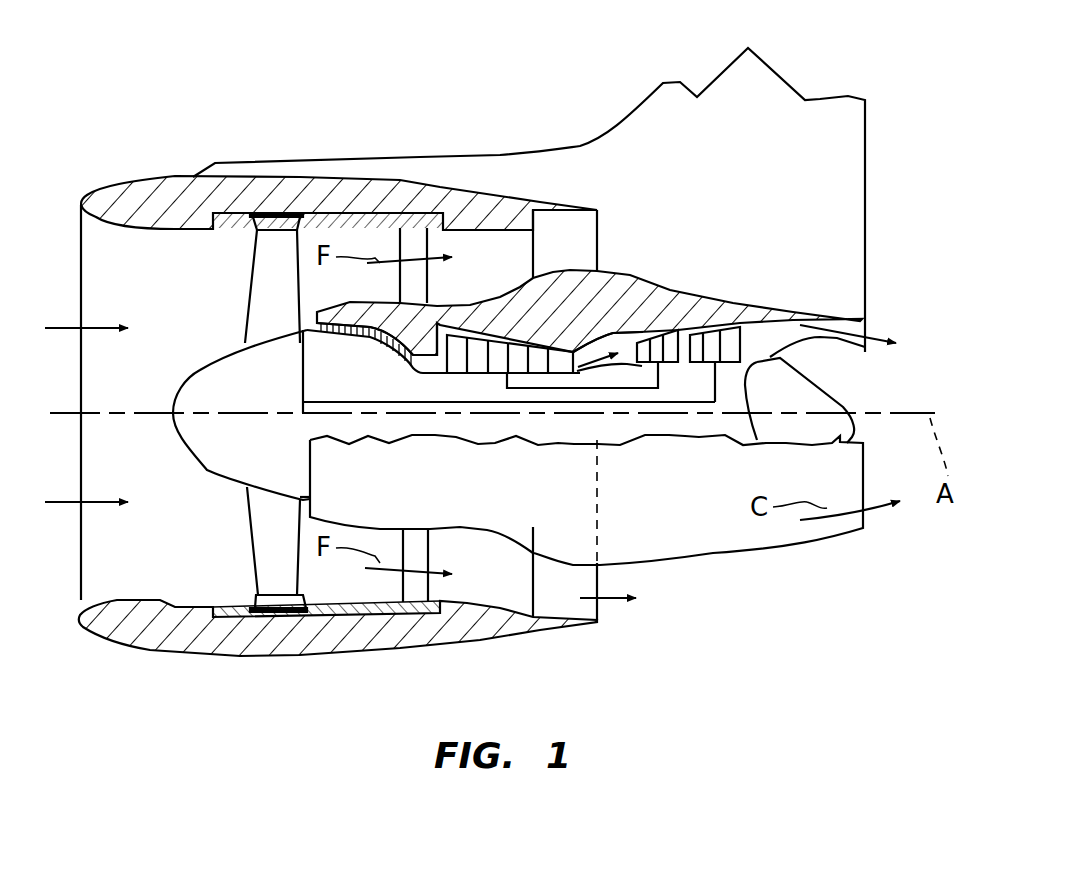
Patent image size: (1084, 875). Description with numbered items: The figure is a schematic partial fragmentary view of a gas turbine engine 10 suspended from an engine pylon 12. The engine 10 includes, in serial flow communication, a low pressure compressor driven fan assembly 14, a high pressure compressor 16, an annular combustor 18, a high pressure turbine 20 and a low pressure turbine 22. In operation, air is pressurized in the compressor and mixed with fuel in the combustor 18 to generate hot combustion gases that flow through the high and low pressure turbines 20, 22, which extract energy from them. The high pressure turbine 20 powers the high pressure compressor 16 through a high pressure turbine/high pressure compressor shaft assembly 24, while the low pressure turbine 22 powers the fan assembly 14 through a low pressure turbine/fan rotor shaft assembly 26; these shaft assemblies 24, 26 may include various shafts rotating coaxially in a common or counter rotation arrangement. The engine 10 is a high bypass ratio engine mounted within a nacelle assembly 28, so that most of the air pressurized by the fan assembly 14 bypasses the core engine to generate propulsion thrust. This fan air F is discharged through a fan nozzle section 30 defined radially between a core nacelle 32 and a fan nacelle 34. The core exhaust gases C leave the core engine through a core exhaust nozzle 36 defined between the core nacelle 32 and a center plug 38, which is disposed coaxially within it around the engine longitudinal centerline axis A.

The gas turbine engine 10 is at (177, 128).
The engine pylon 12 is at (752, 95).
The low pressure compressor driven fan assembly 14 is at (273, 550).
The high pressure compressor 16 is at (477, 375).
The annular combustor 18 is at (613, 367).
The high pressure turbine 20 is at (673, 364).
The low pressure turbine 22 is at (708, 345).
The high pressure turbine/high pressure compressor shaft assembly 24 is at (593, 390).
The low pressure turbine/fan rotor shaft assembly 26 is at (533, 403).
The nacelle assembly 28 is at (256, 674).
The fan nozzle section 30 is at (578, 207).
The core nacelle 32 is at (737, 303).
The fan nacelle 34 is at (273, 190).
The core exhaust nozzle 36 is at (873, 323).
The center plug 38 is at (800, 395).